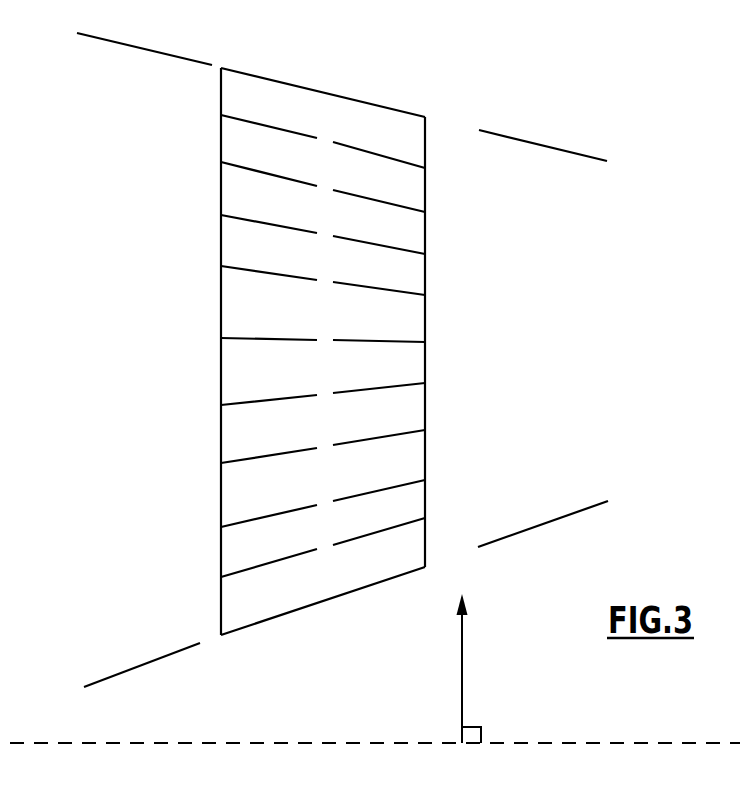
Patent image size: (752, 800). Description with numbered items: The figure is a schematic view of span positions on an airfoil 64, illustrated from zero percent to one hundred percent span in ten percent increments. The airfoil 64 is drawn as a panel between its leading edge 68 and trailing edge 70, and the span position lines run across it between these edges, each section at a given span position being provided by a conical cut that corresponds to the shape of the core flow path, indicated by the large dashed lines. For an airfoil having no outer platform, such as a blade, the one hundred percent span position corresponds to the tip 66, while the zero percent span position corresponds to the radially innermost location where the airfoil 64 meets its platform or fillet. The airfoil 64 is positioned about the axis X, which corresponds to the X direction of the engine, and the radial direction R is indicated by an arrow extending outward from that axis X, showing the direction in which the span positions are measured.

The airfoil 64 is at (341, 347).
The tip 66 is at (320, 92).
The leading edge 68 is at (221, 287).
The trailing edge 70 is at (425, 328).
The axis X is at (262, 743).
The radial axis R is at (462, 678).